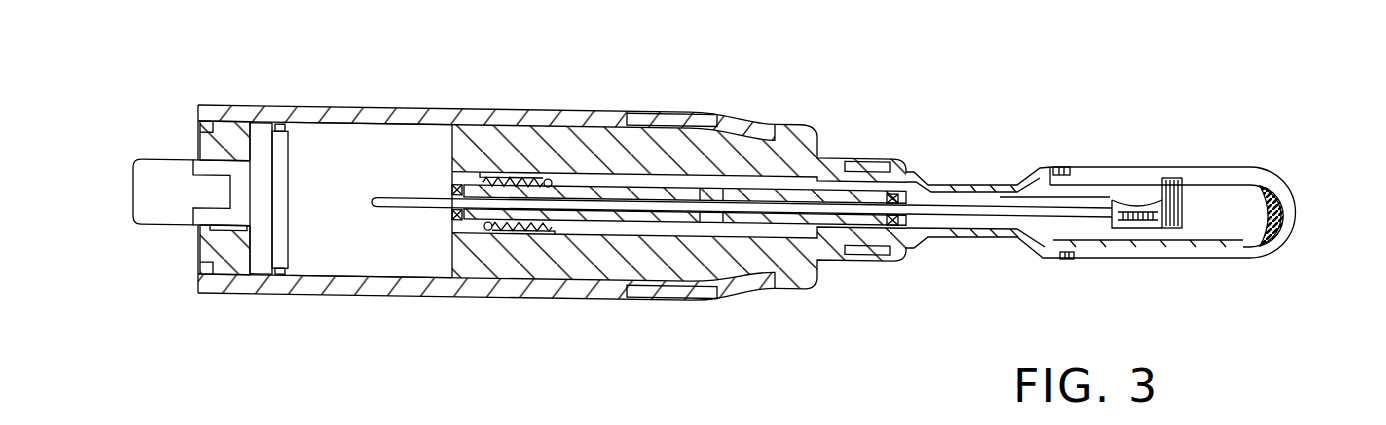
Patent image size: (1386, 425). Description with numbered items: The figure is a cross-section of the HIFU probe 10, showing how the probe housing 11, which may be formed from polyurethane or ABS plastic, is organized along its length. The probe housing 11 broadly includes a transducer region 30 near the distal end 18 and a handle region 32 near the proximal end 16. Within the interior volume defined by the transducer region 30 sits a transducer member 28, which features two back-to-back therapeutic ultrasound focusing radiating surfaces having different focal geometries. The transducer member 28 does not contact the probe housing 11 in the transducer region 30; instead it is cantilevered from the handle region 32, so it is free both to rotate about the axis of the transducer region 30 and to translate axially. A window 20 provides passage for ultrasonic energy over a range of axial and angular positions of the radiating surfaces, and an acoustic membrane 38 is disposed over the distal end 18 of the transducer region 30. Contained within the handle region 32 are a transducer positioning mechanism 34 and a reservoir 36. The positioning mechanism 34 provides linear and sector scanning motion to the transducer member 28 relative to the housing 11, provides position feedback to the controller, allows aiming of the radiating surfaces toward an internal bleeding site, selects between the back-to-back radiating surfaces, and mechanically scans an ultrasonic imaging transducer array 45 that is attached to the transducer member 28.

The device 10 is at (678, 78).
The probe housing 11 is at (802, 292).
The proximal end 16 is at (117, 192).
The distal end 18 is at (1300, 215).
The window 20 is at (1243, 183).
The transducer member 28 is at (1030, 180).
The transducer region 30 is at (988, 283).
The handle region 32 is at (923, 338).
The transducer positioning mechanism 34 is at (755, 143).
The reservoir 36 is at (382, 135).
The acoustic membrane 38 is at (1280, 256).
The ultrasonic imaging transducer array 45 is at (1172, 175).